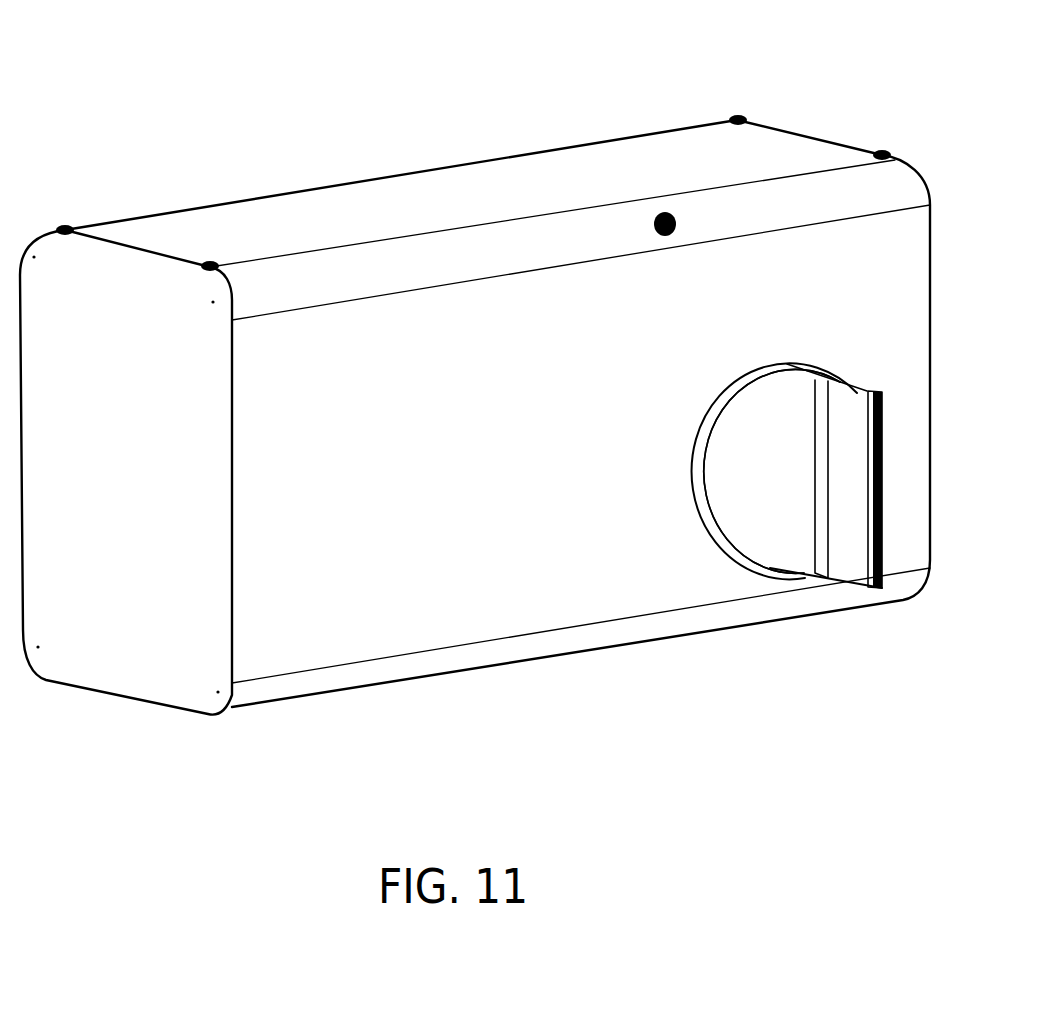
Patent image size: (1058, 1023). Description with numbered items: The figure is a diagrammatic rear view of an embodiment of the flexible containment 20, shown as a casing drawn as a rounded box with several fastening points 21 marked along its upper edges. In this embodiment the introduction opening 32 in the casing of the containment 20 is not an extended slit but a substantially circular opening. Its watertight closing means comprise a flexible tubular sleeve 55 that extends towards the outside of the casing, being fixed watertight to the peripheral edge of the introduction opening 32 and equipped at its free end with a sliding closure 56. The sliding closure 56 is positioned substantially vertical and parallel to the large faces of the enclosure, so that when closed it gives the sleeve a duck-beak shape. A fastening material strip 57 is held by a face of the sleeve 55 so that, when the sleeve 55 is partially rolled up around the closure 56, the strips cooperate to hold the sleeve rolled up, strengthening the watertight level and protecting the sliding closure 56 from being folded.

The flexible containment 20 is at (419, 148).
The fastener 21 is at (65, 226).
The introduction opening 32 is at (710, 540).
The flexible tubular sleeve 55 is at (788, 535).
The fastening material strip 57 is at (823, 570).
The sliding closure 56 is at (873, 533).